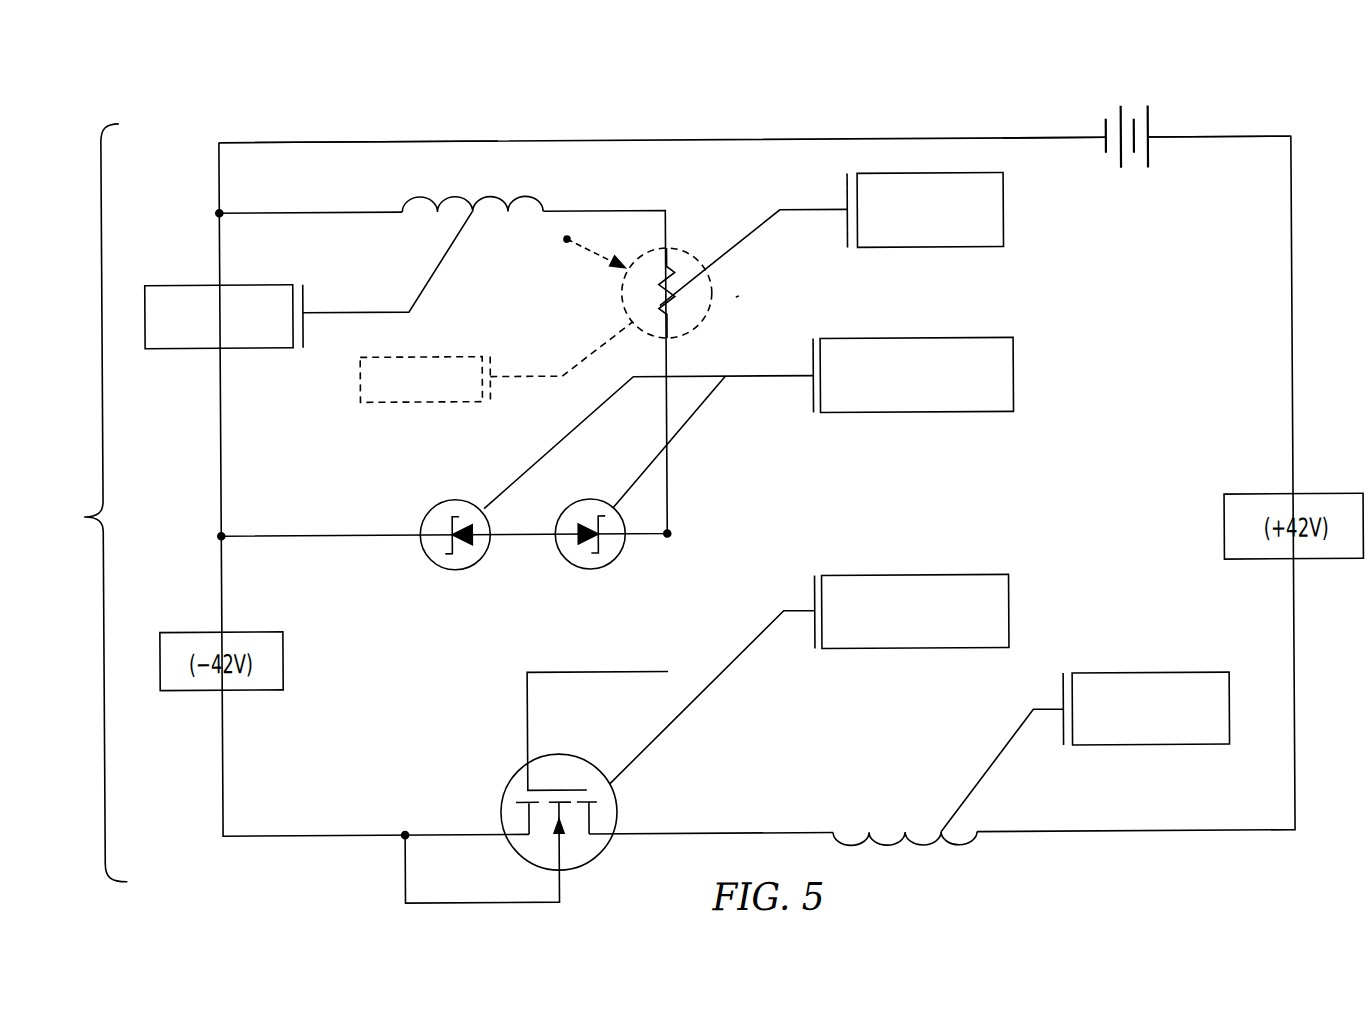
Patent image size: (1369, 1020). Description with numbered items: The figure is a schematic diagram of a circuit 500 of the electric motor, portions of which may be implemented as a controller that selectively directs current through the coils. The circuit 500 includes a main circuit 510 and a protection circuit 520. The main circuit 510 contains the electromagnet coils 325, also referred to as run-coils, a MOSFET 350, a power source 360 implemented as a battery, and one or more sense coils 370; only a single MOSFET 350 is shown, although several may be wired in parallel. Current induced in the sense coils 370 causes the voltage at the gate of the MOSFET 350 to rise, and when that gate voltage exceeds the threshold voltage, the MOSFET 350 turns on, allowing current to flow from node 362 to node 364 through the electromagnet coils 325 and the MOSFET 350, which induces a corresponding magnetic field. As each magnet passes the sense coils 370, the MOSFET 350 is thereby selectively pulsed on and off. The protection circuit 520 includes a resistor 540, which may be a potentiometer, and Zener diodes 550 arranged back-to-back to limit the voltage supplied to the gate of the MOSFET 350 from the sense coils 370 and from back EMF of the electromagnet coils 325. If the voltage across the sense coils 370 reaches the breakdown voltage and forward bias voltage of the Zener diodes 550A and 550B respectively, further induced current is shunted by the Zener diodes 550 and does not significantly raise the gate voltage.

The circuit 500 is at (364, 100).
The main circuit 510 is at (85, 503).
The protection circuit 520 is at (737, 297).
The electromagnet coils 325 is at (1204, 675).
The MOSFET 350 is at (491, 770).
The power source 360 is at (1142, 100).
The node 362 is at (1235, 139).
The node 364 is at (1033, 139).
The sense coils 370 is at (168, 281).
The resistor 540 is at (623, 294).
The Zener diodes 550 is at (628, 581).
The Zener diode 550A is at (590, 497).
The Zener diode 550B is at (455, 497).